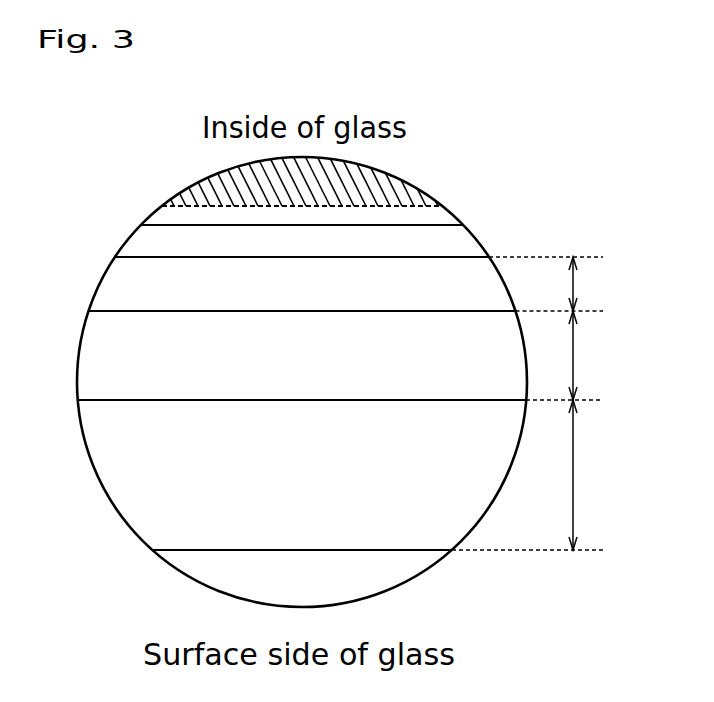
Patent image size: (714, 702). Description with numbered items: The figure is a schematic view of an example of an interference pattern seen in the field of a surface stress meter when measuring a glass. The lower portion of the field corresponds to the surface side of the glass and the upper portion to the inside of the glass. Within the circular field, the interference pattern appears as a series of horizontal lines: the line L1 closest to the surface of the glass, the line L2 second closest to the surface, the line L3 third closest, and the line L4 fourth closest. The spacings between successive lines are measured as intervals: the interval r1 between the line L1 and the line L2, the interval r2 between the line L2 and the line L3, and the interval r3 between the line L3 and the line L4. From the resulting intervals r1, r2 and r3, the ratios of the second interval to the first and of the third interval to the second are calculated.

The line of the interference pattern closest to the surface L1 is at (350, 546).
The line of the interference pattern second closest to the surface L2 is at (320, 393).
The line of the interference pattern third closest to the surface L3 is at (320, 306).
The line of the interference pattern fourth closest to the surface L4 is at (336, 248).
The interval between lines L1 and L2 r1 is at (596, 475).
The interval between lines L2 and L3 r2 is at (596, 355).
The interval between lines L3 and L4 r3 is at (596, 284).